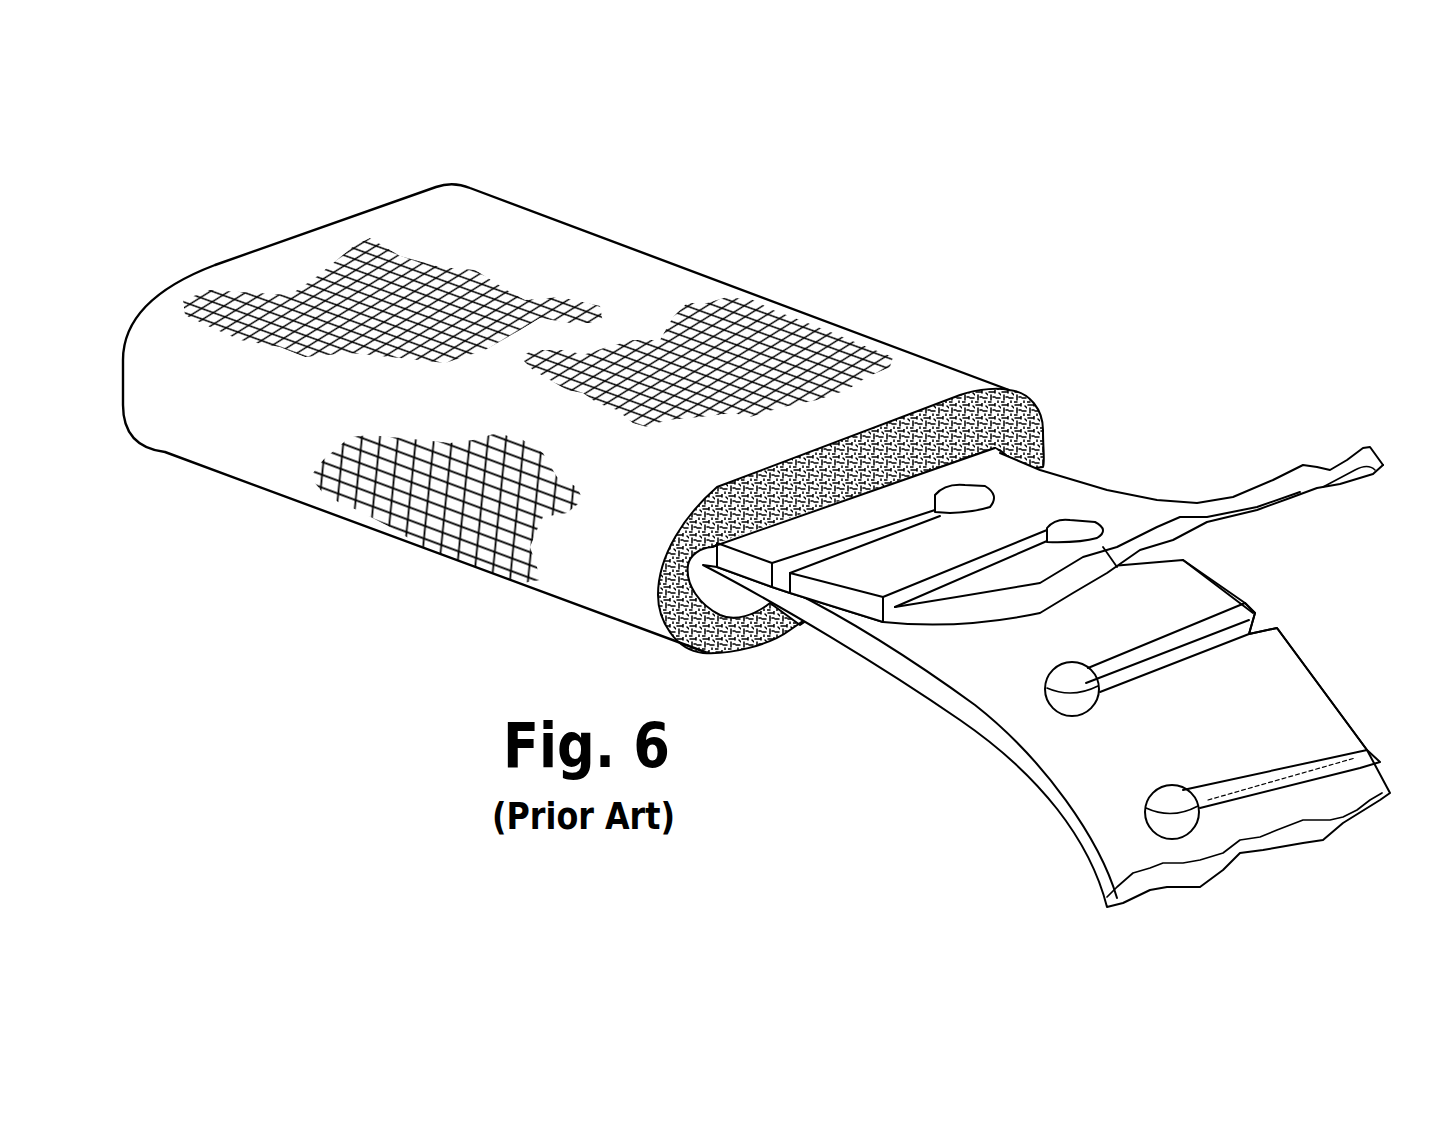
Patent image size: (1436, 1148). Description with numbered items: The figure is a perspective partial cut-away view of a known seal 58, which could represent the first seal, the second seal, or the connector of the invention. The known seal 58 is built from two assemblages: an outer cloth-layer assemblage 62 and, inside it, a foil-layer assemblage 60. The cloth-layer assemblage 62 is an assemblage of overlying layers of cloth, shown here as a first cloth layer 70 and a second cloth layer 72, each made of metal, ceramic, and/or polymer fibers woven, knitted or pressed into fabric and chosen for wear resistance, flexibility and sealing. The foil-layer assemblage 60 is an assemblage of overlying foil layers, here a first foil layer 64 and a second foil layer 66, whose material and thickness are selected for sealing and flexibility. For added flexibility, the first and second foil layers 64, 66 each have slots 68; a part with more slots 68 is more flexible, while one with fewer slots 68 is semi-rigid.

The known seal 58 is at (566, 362).
The cloth-layer assemblage 62 is at (890, 295).
The second cloth layer 72 is at (1016, 403).
The first cloth layer 70 is at (1031, 447).
The slots 68 is at (1000, 550).
The second foil layer 66 is at (1113, 510).
The first foil layer 64 is at (1083, 772).
The foil-layer assemblage 60 is at (792, 665).